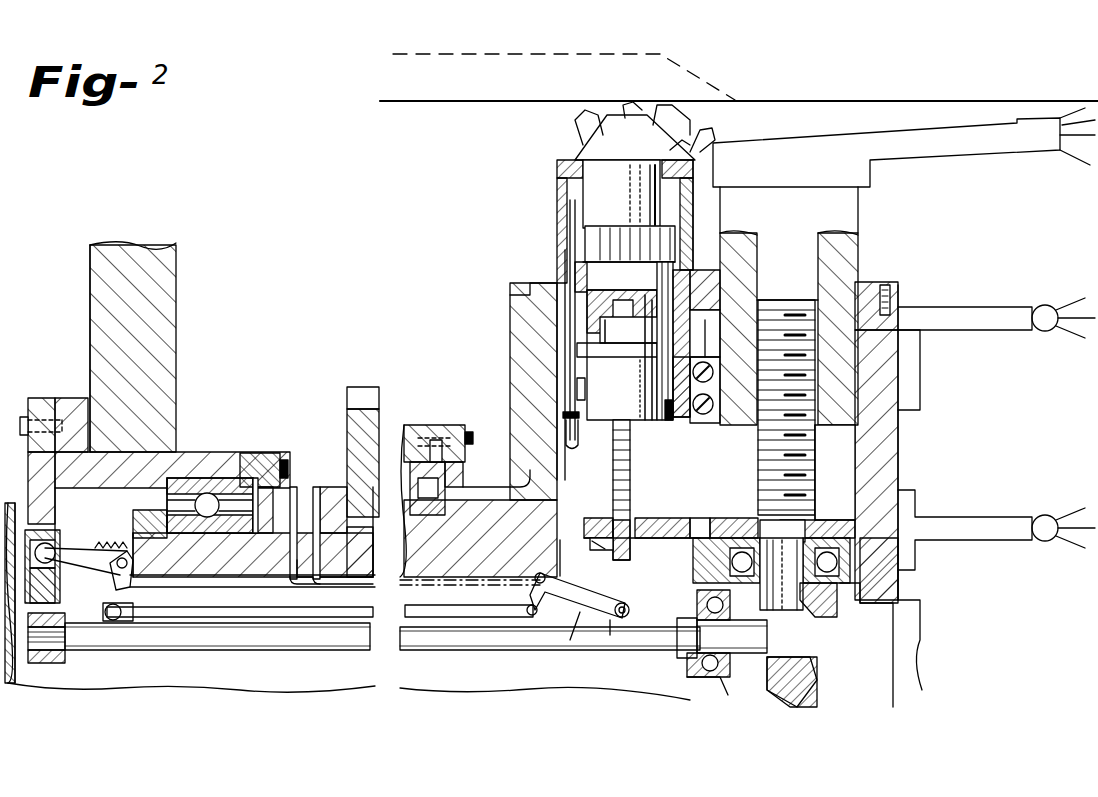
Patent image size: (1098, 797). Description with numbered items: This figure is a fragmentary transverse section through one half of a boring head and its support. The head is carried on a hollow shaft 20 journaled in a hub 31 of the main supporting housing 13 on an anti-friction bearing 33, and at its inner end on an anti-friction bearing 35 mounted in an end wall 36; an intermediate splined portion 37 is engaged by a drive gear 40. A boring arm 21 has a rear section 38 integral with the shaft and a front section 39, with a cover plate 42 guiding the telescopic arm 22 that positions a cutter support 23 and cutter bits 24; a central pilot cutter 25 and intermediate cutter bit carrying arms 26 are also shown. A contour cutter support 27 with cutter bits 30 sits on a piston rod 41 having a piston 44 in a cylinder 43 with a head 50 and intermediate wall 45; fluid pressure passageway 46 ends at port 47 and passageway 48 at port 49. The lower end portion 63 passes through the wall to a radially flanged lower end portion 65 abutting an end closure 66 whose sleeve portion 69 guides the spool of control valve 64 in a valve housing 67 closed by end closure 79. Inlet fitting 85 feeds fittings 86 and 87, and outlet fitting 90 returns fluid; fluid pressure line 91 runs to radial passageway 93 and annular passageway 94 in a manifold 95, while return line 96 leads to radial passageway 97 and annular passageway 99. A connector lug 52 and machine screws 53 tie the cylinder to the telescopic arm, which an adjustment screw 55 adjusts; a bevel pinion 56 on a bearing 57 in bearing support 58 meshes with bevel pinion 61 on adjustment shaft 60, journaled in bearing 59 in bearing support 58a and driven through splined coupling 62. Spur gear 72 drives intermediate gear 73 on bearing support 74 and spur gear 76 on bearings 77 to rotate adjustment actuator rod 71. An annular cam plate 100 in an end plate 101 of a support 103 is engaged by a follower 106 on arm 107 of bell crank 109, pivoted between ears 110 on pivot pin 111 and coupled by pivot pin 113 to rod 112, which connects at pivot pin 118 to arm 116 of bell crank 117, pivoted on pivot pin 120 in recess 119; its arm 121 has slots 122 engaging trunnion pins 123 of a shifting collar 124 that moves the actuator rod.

The main supporting housing 13 is at (88, 298).
The end wall 36 is at (176, 290).
The end plate 101 is at (40, 398).
The support 103 is at (68, 398).
The drive gear 40 is at (358, 387).
The anti-friction bearing 35 is at (195, 478).
The manifold 95 is at (322, 487).
The annular passageway 94 is at (310, 487).
The hub 31 is at (420, 425).
The anti-friction bearing 33 is at (410, 480).
The intermediate splined portion 37 is at (410, 500).
The radial passageway 93 is at (404, 510).
The hollow shaft 20 is at (486, 487).
The rear section 38 is at (508, 300).
The lower end portion 63 is at (556, 305).
The passageway 48 is at (560, 225).
The fitting 86 is at (575, 385).
The fitting 87 is at (566, 430).
The valve housing 67 is at (562, 413).
The contour cutter support 27 is at (580, 144).
The cutter bits 30 is at (590, 110).
The head 50 is at (557, 168).
The port 49 is at (560, 183).
The piston rod 41 is at (590, 200).
The cylinder 43 is at (585, 240).
The port 47 is at (582, 258).
The piston 44 is at (564, 257).
The fluid pressure passageway 46 is at (574, 275).
The intermediate wall 45 is at (685, 283).
The sleeve portion 69 is at (612, 338).
The control valve 64 is at (600, 426).
The end closure 79 is at (663, 415).
The inlet fitting 85 is at (680, 410).
The fluid pressure line 91 is at (348, 580).
The radially flanged lower end portion 65 is at (712, 335).
The end closure 66 is at (712, 347).
The outlet fitting 90 is at (715, 370).
The return line 96 is at (296, 580).
The machine screws 53 is at (716, 407).
The connector lug 52 is at (760, 407).
The adjustment actuator rod 71 is at (631, 494).
The cutter supports 23 is at (966, 155).
The cutter bits 24 is at (1065, 160).
The telescopic arm 22 is at (860, 250).
The cover plate 42 is at (870, 282).
The front section 39 is at (892, 305).
The boring arm 21 is at (900, 438).
The intermediate cutter bit carrying arms 26 is at (975, 307).
The central pilot cutter 25 is at (978, 517).
The adjustment screw 55 is at (815, 490).
The spur gear 72 is at (835, 520).
The intermediate gear 73 is at (712, 528).
The spur gear 76 is at (648, 522).
The anti-friction bearings 77 is at (600, 551).
The bearing support 74 is at (726, 560).
The anti-friction bearing 57 is at (842, 562).
The bearing support 58 is at (895, 605).
The bevel pinion 56 is at (818, 612).
The bevel pinion 61 is at (768, 615).
The anti-friction bearing 59 is at (700, 672).
The bearing support 58a is at (710, 692).
The arm 116 is at (525, 598).
The pivot pin 120 is at (538, 574).
The bell crank 117 is at (585, 600).
The pivot pin 118 is at (530, 618).
The recess 119 is at (590, 487).
The arm 121 is at (580, 625).
The slots 122 is at (612, 622).
The trunnion pins 123 is at (630, 604).
The shifting collar 124 is at (632, 609).
The adjustment shaft 60 is at (322, 652).
The splined coupling 62 is at (46, 663).
The rod 112 is at (210, 623).
The ears 110 is at (138, 582).
The pivot pin 113 is at (104, 613).
The pivot pin 111 is at (115, 567).
The annular cam plate 100 is at (60, 592).
The follower 106 is at (58, 545).
The arm 107 is at (86, 550).
The bell crank 109 is at (124, 536).
The annular passageway 99 is at (255, 560).
The radial passageway 97 is at (290, 565).